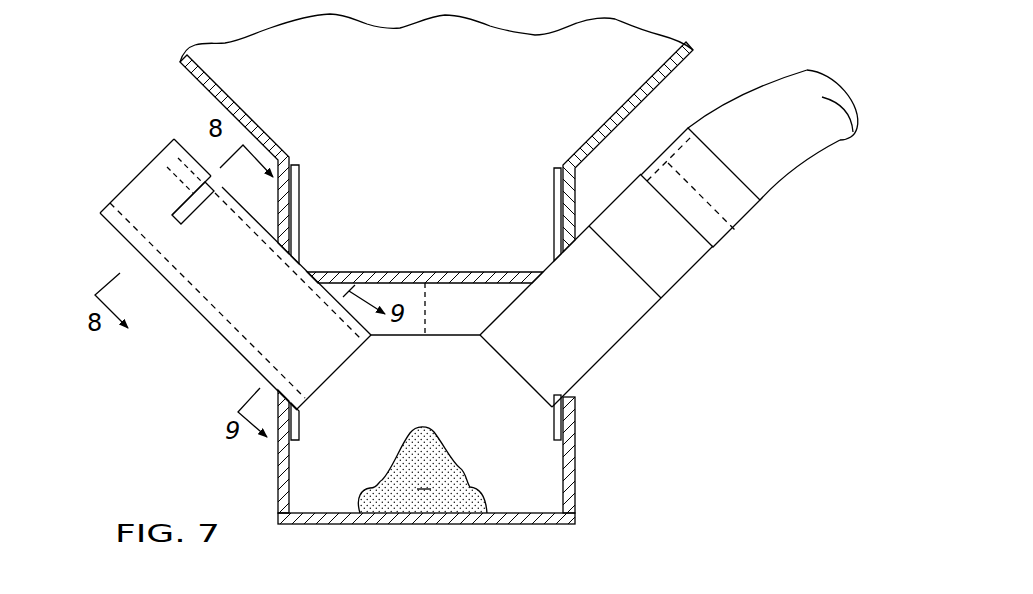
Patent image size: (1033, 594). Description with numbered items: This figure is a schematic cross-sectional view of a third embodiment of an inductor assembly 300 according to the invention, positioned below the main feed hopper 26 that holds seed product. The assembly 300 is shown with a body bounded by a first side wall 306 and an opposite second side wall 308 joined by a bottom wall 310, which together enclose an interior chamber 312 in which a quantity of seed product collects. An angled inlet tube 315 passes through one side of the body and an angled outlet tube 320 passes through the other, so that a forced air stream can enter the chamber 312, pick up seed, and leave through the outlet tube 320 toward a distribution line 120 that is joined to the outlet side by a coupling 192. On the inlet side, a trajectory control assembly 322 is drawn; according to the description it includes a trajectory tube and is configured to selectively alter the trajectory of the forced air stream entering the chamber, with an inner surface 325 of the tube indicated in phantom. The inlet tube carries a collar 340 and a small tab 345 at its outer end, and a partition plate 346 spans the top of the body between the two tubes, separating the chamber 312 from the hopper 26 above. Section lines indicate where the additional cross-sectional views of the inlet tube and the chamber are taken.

The main feed hopper 26 is at (667, 76).
The distribution line 120 is at (753, 93).
The hose coupling 192 is at (757, 222).
The adapter assembly 300 is at (701, 365).
The first side wall 306 is at (278, 472).
The second side wall 308 is at (576, 493).
The bottom wall 310 is at (423, 525).
The chamber 312 is at (519, 479).
The inlet tube 315 is at (100, 216).
The outlet tube 320 is at (649, 328).
The trajectory control assembly 322 is at (196, 299).
The inner wall 325 is at (236, 347).
The collar 340 is at (172, 210).
The tab 345 is at (202, 207).
The partition plate 346 is at (425, 272).